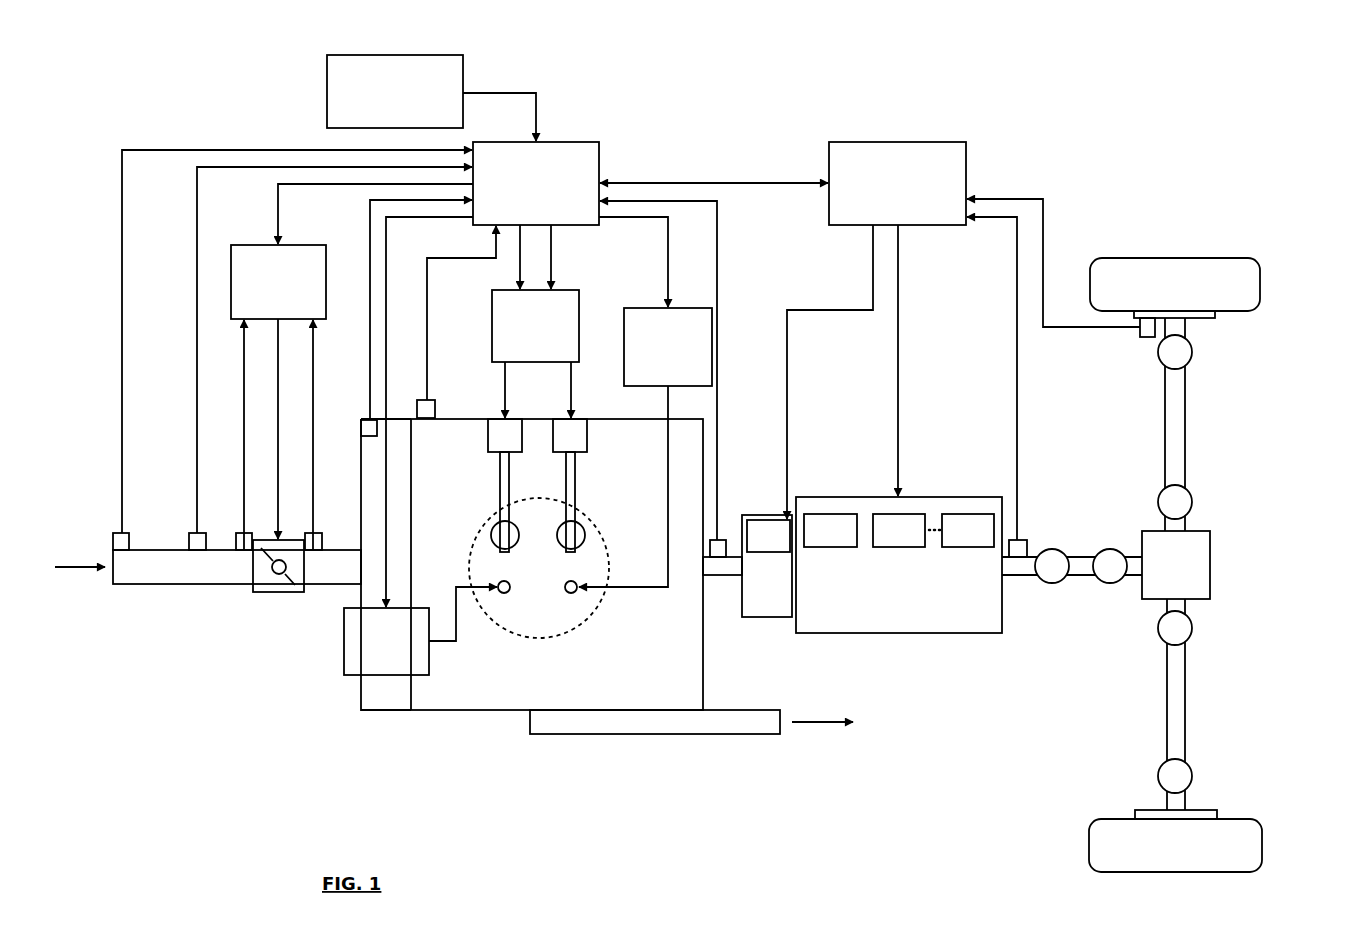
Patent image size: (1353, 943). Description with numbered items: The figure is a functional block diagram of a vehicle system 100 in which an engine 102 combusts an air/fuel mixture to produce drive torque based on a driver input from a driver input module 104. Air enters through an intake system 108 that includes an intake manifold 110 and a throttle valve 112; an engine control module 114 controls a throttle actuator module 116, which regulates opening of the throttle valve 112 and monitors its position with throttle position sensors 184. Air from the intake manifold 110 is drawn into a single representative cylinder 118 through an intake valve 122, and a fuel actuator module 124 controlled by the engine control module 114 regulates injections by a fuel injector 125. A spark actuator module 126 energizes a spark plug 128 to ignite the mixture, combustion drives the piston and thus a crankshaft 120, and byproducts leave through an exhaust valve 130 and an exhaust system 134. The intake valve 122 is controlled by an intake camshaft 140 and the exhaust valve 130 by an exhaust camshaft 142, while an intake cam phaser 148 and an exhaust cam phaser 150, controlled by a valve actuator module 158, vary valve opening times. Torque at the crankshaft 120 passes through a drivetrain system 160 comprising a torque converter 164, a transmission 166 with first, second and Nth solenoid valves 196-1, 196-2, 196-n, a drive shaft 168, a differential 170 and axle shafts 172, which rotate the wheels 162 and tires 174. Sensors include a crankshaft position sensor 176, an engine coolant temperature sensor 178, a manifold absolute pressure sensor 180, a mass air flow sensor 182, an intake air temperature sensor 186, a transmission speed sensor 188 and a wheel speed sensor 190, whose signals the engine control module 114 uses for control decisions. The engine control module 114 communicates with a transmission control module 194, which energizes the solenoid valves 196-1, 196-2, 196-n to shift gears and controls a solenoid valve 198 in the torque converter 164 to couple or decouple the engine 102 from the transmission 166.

The vehicle system 100 is at (142, 82).
The engine 102 is at (490, 710).
The driver input module 104 is at (327, 80).
The intake system 108 is at (240, 667).
The intake manifold 110 is at (361, 695).
The throttle valve 112 is at (272, 592).
The engine control module 114 is at (599, 150).
The throttle actuator module 116 is at (252, 245).
The cylinder 118 is at (594, 620).
The crankshaft 120 is at (721, 576).
The intake valve 122 is at (491, 538).
The fuel actuator module 124 is at (429, 660).
The fuel injector 125 is at (498, 587).
The spark actuator module 126 is at (644, 308).
The spark plug 128 is at (578, 592).
The exhaust valve 130 is at (585, 538).
The exhaust system 134 is at (722, 768).
The intake camshaft 140 is at (500, 490).
The exhaust camshaft 142 is at (575, 483).
The intake cam phaser 148 is at (488, 440).
The exhaust cam phaser 150 is at (587, 440).
The valve actuator module 158 is at (492, 318).
The drivetrain system 160 is at (872, 660).
The wheels 162 is at (1215, 314).
The torque converter 164 is at (767, 617).
The transmission 166 is at (950, 497).
The drive shaft 168 is at (1080, 583).
The differential 170 is at (1210, 570).
The axle shafts 172 is at (1185, 430).
The tires 174 is at (1260, 285).
The crankshaft position sensor 176 is at (726, 540).
The engine coolant temperature sensor 178 is at (432, 400).
The manifold absolute pressure sensor 180 is at (364, 420).
The mass air flow sensor 182 is at (189, 540).
The throttle position sensors 184 is at (244, 558).
The intake air temperature sensor 186 is at (113, 540).
The transmission speed sensor 188 is at (1018, 540).
The wheel speed sensor 190 is at (1147, 337).
The transmission control module 194 is at (966, 142).
The first solenoid valve 196-1 is at (830, 547).
The second solenoid valve 196-2 is at (884, 514).
The Nth solenoid valve 196-n is at (968, 547).
The solenoid valve 198 is at (782, 520).